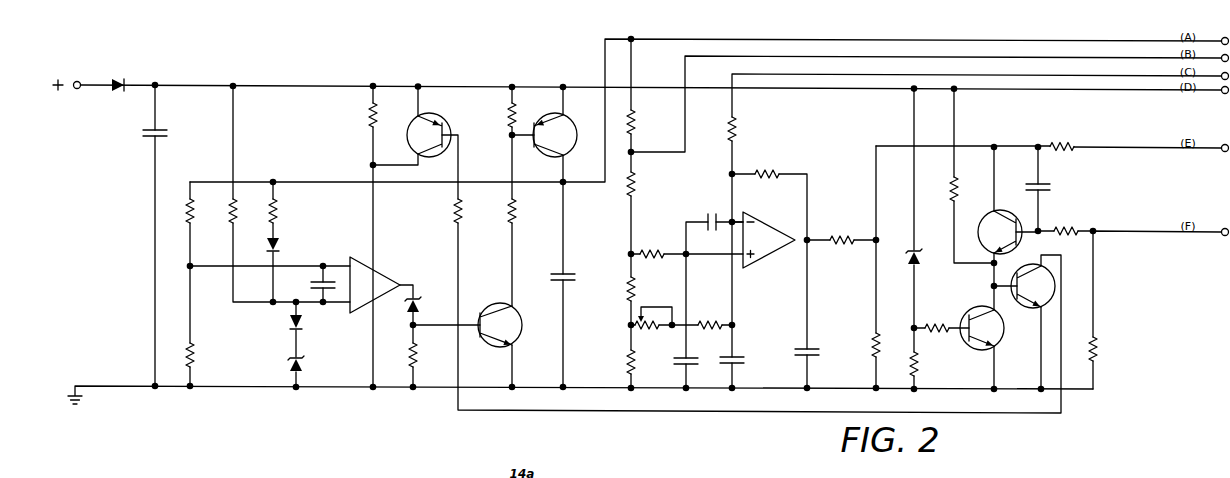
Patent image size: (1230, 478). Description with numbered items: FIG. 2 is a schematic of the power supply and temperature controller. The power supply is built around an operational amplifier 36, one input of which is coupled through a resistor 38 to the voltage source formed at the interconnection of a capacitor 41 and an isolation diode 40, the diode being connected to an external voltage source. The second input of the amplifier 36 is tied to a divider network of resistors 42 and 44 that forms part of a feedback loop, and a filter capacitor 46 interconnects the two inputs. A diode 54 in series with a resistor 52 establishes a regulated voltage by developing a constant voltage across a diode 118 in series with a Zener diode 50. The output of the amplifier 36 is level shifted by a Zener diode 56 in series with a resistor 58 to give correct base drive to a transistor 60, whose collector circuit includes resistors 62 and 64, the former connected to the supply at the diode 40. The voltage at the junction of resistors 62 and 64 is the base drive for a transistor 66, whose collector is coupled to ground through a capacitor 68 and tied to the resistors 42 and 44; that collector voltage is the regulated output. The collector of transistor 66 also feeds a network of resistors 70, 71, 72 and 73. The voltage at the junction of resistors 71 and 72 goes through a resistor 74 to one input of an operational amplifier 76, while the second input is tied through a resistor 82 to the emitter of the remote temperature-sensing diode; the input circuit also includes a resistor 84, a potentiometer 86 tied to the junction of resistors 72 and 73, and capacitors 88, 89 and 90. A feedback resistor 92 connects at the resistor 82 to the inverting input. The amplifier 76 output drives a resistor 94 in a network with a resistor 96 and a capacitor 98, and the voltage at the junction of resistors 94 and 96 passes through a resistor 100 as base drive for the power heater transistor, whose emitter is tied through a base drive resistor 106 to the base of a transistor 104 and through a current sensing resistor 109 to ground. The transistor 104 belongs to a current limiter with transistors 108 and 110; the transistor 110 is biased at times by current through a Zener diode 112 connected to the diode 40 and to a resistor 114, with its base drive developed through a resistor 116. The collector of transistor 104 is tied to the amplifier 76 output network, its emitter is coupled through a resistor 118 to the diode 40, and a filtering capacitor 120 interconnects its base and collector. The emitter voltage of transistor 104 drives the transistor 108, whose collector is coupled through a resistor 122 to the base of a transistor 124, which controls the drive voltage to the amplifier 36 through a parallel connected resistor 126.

The isolation diode 40 is at (122, 79).
The capacitor 41 is at (150, 137).
The resistor 42 is at (188, 212).
The resistor 38 is at (236, 211).
The resistor 52 is at (277, 212).
The diode 54 is at (281, 247).
The filter capacitor 46 is at (319, 276).
The resistor 44 is at (194, 356).
The diode / resistor 118 is at (290, 324).
The Zener diode 50 is at (290, 368).
The resistor 126 is at (370, 120).
The transistor 124 is at (434, 122).
The resistor 62 is at (510, 114).
The transistor 66 is at (550, 120).
The resistor 122 is at (457, 211).
The resistor 64 is at (514, 213).
The operational amplifier 36 is at (384, 280).
The Zener diode 56 is at (419, 306).
The transistor 60 is at (490, 308).
The resistor 58 is at (413, 352).
The capacitor 68 is at (570, 276).
The resistor 70 is at (633, 124).
The resistor 71 is at (632, 189).
The resistor 72 is at (628, 289).
The resistor 73 is at (629, 361).
The resistor 74 is at (653, 236).
The potentiometer 86 is at (643, 330).
The resistor 84 is at (713, 322).
The capacitor 89 is at (679, 364).
The capacitor 90 is at (737, 364).
The capacitor 88 is at (708, 212).
The resistor 82 is at (736, 131).
The resistor 92 is at (766, 172).
The operational amplifier 76 is at (769, 241).
The resistor 94 is at (841, 237).
The Zener diode 112 is at (905, 261).
The capacitor 98 is at (812, 347).
The resistor 96 is at (874, 354).
The resistor 100 is at (1063, 143).
The filtering capacitor 120 is at (1045, 184).
The transistor 104 is at (981, 225).
The base drive resistor 106 is at (1069, 229).
The transistor 110 is at (979, 309).
The resistor 116 is at (937, 325).
The resistor 114 is at (917, 361).
The transistor 108 is at (1048, 286).
The current sensing resistor 109 is at (1098, 350).